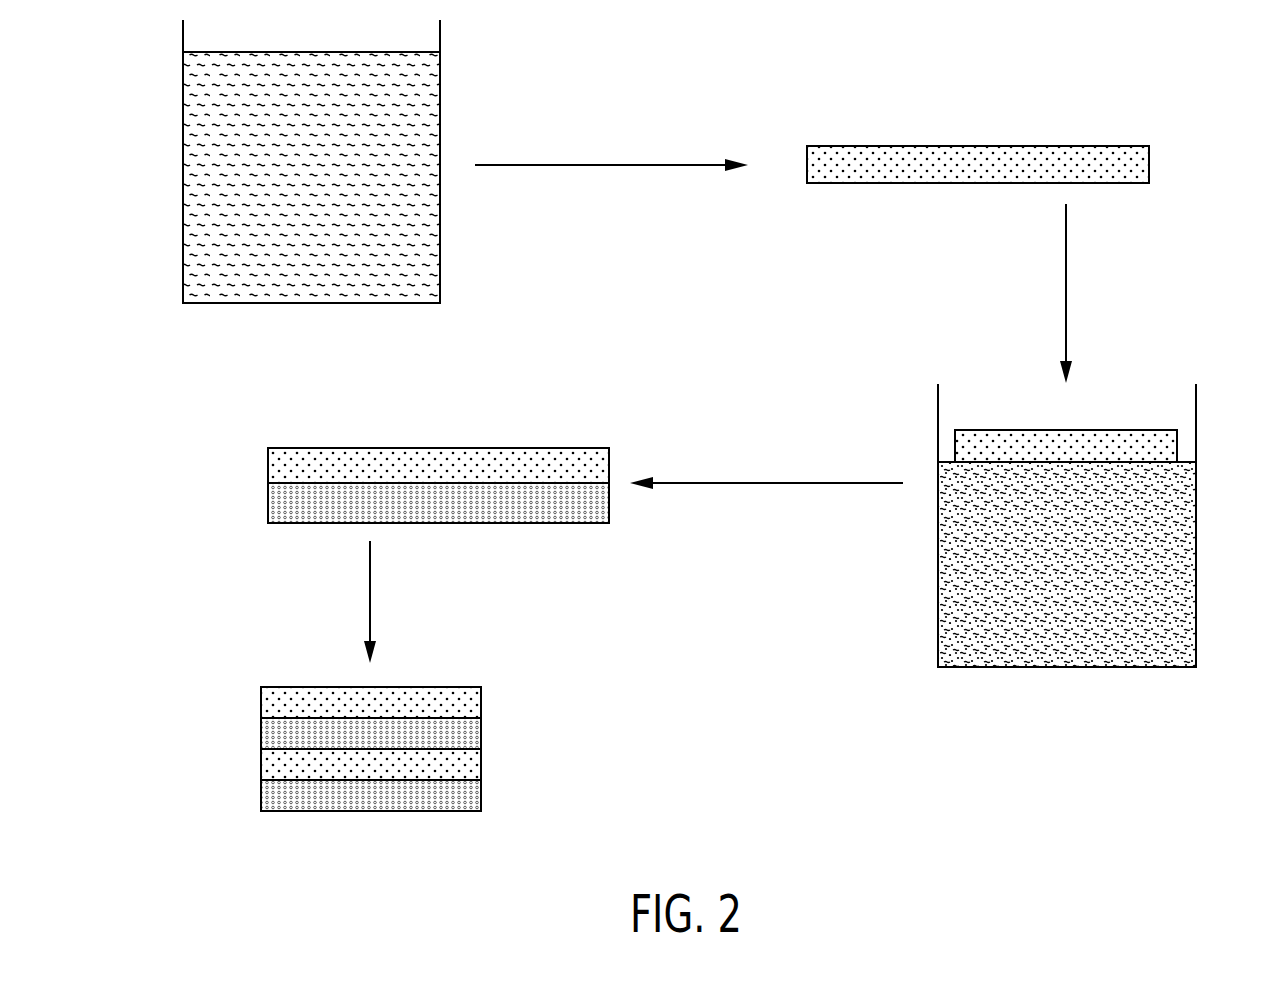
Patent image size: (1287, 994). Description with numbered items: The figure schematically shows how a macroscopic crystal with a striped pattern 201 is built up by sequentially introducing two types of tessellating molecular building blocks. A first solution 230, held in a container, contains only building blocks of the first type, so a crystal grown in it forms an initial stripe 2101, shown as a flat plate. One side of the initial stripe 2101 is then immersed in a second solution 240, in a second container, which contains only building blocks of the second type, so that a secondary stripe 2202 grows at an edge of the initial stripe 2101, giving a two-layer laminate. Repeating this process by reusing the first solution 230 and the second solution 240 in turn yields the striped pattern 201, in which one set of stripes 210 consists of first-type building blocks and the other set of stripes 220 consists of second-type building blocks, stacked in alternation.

The striped pattern 201 is at (357, 738).
The set of stripes 210 is at (472, 700).
The initial stripe 2101 is at (240, 451).
The other set of stripes 220 is at (472, 732).
The secondary stripe 2202 is at (283, 507).
The first solution 230 is at (287, 120).
The second solution 240 is at (1165, 518).